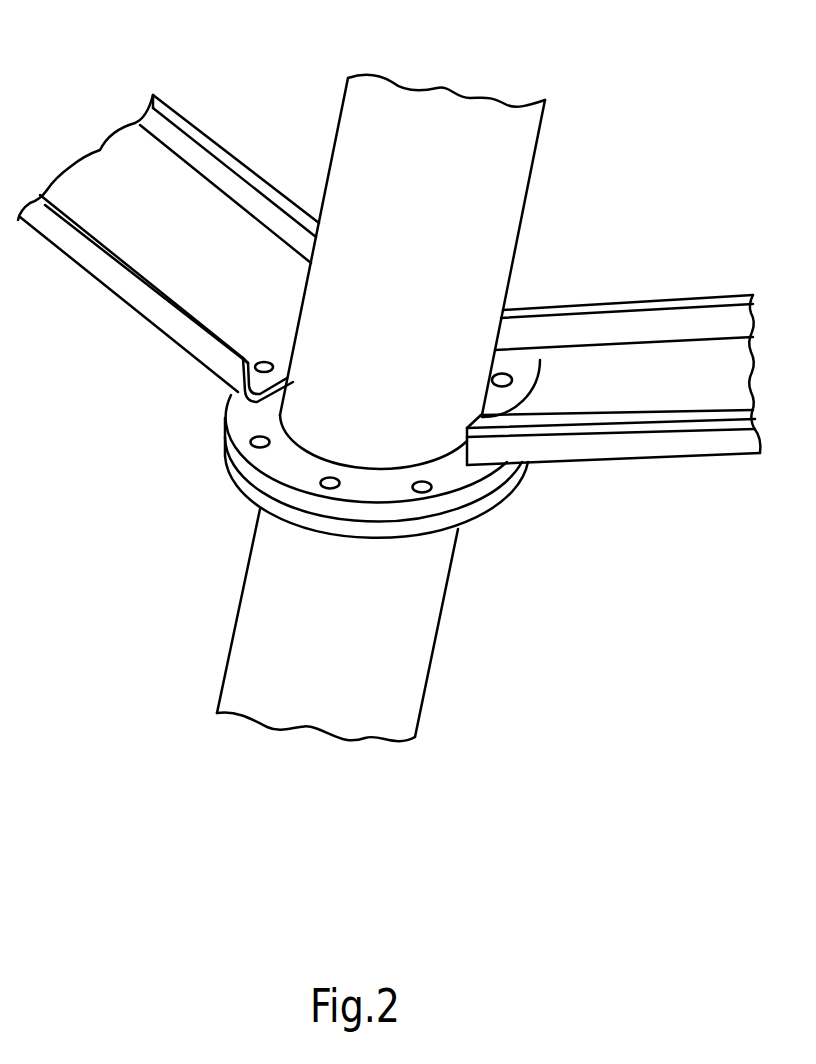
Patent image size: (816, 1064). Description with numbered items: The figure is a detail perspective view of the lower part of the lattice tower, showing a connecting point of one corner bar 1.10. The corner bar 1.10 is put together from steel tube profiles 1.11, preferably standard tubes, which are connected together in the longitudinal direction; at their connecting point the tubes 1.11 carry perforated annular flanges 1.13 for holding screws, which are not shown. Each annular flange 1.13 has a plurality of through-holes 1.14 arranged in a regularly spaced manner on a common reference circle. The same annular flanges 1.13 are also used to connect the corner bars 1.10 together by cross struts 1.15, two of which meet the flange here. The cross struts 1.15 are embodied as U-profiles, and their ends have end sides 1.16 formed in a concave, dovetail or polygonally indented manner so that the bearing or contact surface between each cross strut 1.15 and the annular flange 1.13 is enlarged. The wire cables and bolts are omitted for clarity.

The corner bar 1.10 is at (305, 123).
The steel tube profile 1.11 is at (508, 155).
The annular flange 1.13 is at (462, 481).
The through-holes 1.14 is at (320, 484).
The cross strut 1.15 is at (100, 177).
The end side 1.16 is at (540, 360).